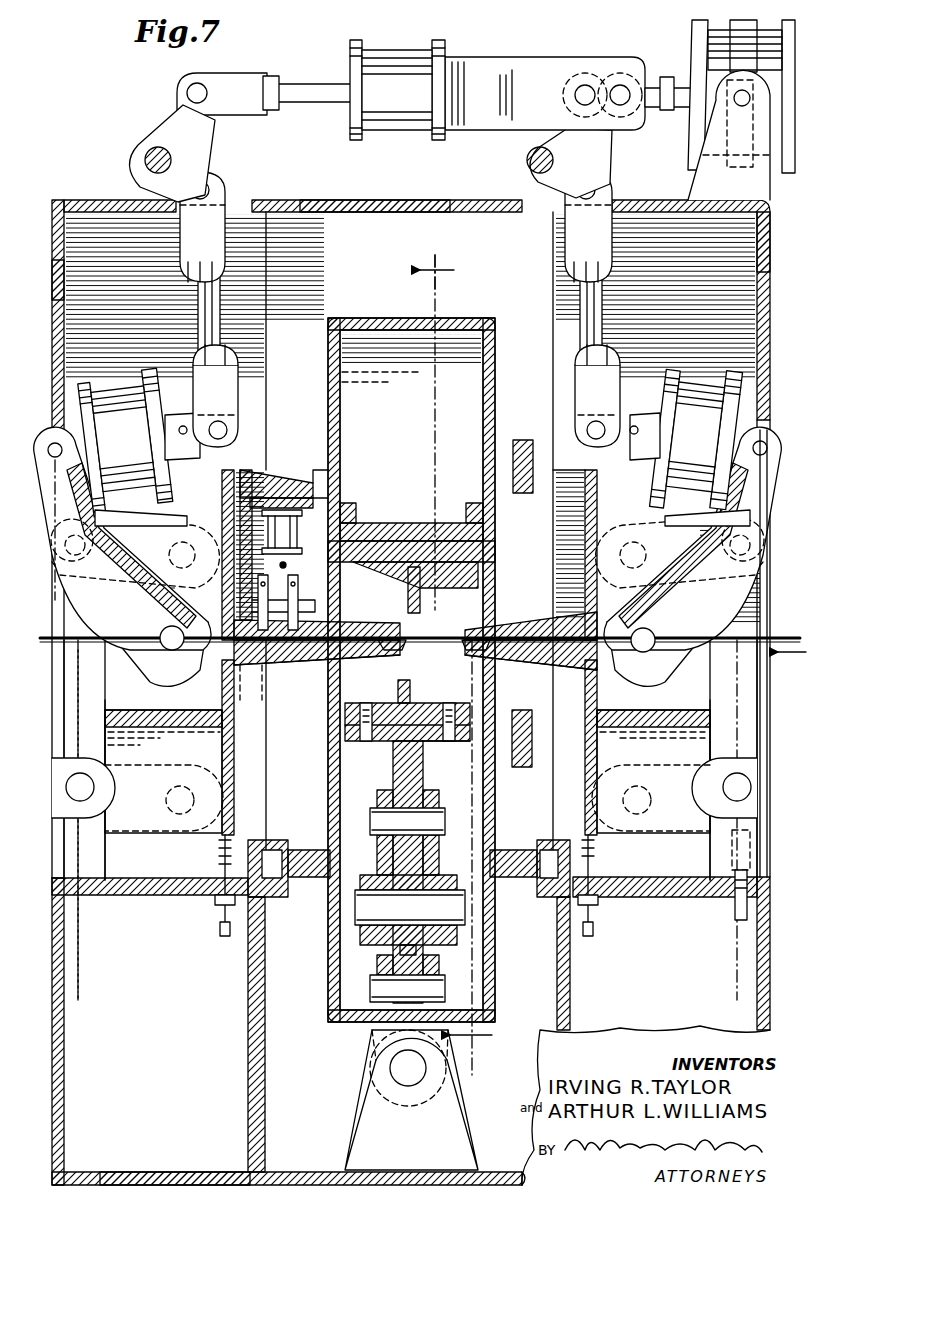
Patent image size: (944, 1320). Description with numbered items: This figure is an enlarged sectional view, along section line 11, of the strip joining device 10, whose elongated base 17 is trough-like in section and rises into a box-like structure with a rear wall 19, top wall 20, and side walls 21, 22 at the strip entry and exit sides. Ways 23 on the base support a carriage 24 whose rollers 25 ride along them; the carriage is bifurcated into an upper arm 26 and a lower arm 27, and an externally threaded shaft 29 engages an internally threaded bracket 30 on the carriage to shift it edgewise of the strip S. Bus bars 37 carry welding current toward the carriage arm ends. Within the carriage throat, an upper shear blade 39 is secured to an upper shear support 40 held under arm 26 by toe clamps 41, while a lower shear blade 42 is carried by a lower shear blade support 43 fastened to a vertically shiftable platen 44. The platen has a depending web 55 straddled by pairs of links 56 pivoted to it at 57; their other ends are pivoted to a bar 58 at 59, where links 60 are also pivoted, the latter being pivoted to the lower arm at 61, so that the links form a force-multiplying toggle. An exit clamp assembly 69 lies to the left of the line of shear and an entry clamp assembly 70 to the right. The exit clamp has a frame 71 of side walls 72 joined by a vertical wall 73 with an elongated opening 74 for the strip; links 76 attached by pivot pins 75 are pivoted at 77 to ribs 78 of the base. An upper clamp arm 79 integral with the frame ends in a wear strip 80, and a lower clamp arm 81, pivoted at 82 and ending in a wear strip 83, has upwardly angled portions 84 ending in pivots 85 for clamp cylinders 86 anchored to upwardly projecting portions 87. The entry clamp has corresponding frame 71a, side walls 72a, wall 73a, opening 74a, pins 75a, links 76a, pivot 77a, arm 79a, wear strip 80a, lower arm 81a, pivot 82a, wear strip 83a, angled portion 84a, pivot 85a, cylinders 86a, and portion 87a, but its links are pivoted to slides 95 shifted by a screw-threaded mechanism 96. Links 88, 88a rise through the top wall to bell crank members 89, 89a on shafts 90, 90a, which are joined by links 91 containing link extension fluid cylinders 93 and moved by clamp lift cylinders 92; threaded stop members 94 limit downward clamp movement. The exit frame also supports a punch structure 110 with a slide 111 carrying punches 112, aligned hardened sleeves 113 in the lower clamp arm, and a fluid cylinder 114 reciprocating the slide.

The joining device 10 is at (50, 244).
The section line 11 is at (474, 650).
The base 17 is at (184, 1168).
The rear wall 19 is at (358, 257).
The top wall 20 is at (366, 207).
The side wall 21 is at (757, 247).
The side wall 22 is at (52, 278).
The ways 23 is at (486, 580).
The carriage 24 is at (497, 380).
The rollers 25 is at (286, 860).
The upper arm 26 is at (347, 408).
The lower arm 27 is at (312, 998).
The externally threaded shaft 29 is at (410, 1086).
The internally threaded bracket 30 is at (366, 1038).
The bus bars 37 is at (522, 438).
The upper shear blade 39 is at (406, 600).
The upper shear support 40 is at (402, 545).
The toe clamps 41 is at (346, 532).
The lower shear blade 42 is at (412, 692).
The lower shear blade support 43 is at (386, 716).
The platen 44 is at (430, 745).
The depending web 55 is at (424, 776).
The links 56 is at (378, 844).
The pivot 57 is at (407, 821).
The bar 58 is at (372, 880).
The pivot 59 is at (410, 907).
The links 60 is at (398, 950).
The pivot 61 is at (407, 988).
The exit clamp assembly 69 is at (80, 670).
The entry clamp assembly 70 is at (734, 680).
The frame 71 is at (104, 702).
The frame 71a is at (712, 730).
The side walls 72 is at (165, 758).
The side walls 72a is at (660, 766).
The vertically extending wall 73 is at (236, 754).
The vertically extending wall 73a is at (599, 600).
The opening 74 is at (144, 545).
The opening 74a is at (630, 692).
The pivot pins 75 is at (180, 816).
The pivot pins 75a is at (640, 816).
The links 76 is at (105, 804).
The links 76a is at (735, 806).
The pivot 77 is at (66, 540).
The pivot 77a is at (762, 536).
The ribs 78 is at (82, 738).
The upper clamp arm 79 is at (320, 625).
The upper clamp arm 79a is at (507, 630).
The wear strip 80 is at (382, 636).
The wear strip 80a is at (430, 640).
The lower clamp arm 81 is at (298, 660).
The lower clamp arm 81a is at (540, 672).
The pivot 82 is at (168, 652).
The pivot 82a is at (643, 652).
The wear strip 83 is at (312, 668).
The wear strip 83a is at (494, 662).
The upwardly angled portion 84 is at (84, 584).
The upwardly angled portion 84a is at (745, 582).
The pivot 85 is at (52, 443).
The pivot 85a is at (762, 440).
The clamp cylinders 86 is at (138, 436).
The clamp cylinders 86a is at (698, 395).
The upwardly projecting portion 87 is at (245, 470).
The upwardly projecting portion 87a is at (598, 460).
The link 88 is at (222, 306).
The link 88a is at (598, 300).
The bell crank members 89 is at (204, 140).
The bell crank members 89a is at (588, 146).
The shaft 90 is at (146, 158).
The shaft 90a is at (526, 160).
The links 91 is at (498, 75).
The clamp lift cylinder 92 is at (694, 30).
The link extension fluid cylinder 93 is at (386, 68).
The threaded stop members 94 is at (222, 910).
The slides 95 is at (748, 610).
The screw-threaded mechanism 96 is at (738, 905).
The punch structure 110 is at (315, 470).
The slide 111 is at (255, 530).
The punches 112 is at (270, 592).
The hardened sleeves 113 is at (236, 668).
The fluid cylinder 114 is at (316, 502).
The strip S is at (42, 636).